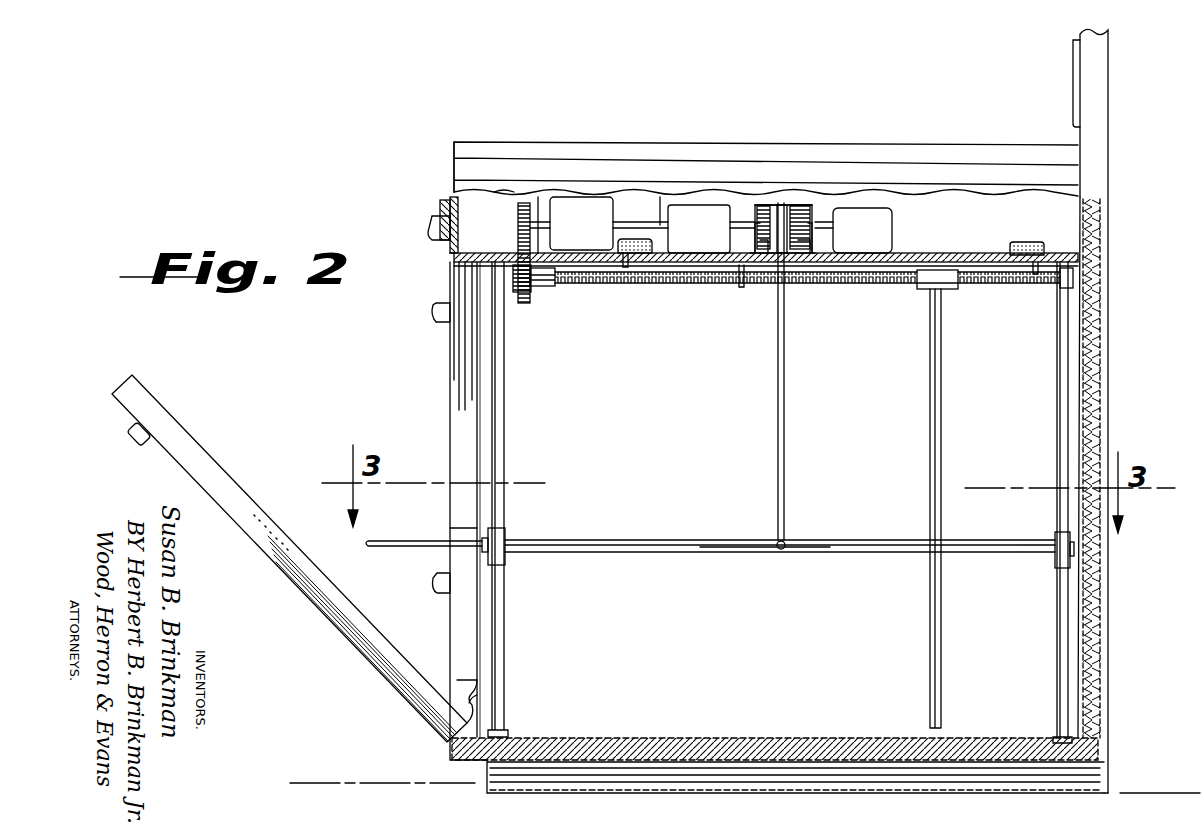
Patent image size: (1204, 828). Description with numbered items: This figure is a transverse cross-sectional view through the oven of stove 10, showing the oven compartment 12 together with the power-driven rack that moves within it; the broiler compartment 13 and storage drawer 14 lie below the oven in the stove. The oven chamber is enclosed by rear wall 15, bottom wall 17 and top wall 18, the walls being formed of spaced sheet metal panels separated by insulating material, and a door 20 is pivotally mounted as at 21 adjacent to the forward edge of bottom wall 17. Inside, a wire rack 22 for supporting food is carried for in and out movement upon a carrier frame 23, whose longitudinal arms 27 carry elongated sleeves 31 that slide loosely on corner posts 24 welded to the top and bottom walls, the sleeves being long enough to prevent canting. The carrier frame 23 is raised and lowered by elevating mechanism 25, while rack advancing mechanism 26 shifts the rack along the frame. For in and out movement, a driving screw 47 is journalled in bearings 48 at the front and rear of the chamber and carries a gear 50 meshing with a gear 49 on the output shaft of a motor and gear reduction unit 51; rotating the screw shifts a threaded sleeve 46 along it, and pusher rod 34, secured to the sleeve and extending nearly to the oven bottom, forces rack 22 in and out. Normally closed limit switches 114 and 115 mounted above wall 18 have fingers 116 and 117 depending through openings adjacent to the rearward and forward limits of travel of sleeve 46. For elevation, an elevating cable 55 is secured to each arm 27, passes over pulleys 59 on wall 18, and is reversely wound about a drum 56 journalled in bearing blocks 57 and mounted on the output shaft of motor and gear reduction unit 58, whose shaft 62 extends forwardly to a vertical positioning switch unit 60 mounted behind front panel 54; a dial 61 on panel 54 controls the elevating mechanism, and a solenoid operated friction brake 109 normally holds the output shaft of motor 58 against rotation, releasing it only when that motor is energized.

The stove 10 is at (1104, 162).
The oven compartment 12 is at (588, 404).
The broiler compartment 13 is at (452, 360).
The storage drawer 14 is at (452, 606).
The rear wall 15 is at (1105, 410).
The bottom wall 17 is at (805, 744).
The top wall 18 is at (930, 254).
The door 20 is at (343, 606).
The door pivot 21 is at (458, 690).
The rack 22 is at (388, 541).
The carrier frame 23 is at (636, 542).
The corner posts 24 is at (506, 452).
The elevating mechanism 25 is at (812, 191).
The rack advancing mechanism 26 is at (560, 186).
The longitudinal arms 27 is at (840, 542).
The sleeves 31 is at (505, 556).
The pusher rod 34 is at (942, 411).
The threaded sleeve 46 is at (930, 285).
The driving screw 47 is at (840, 284).
The bearings 48 is at (537, 282).
The gear 49 is at (516, 210).
The gear 50 is at (525, 300).
The motor and gear reduction unit 51 is at (587, 210).
The front panel 54 is at (452, 188).
The elevating cable 55 is at (784, 405).
The drum 56 is at (785, 204).
The bearing blocks 57 is at (757, 204).
The motor and gear reduction unit 58 is at (695, 214).
The pulleys 59 is at (742, 284).
The vertical positioning switch unit 60 is at (498, 190).
The dial 61 is at (434, 202).
The shaft 62 is at (660, 222).
The solenoid operated friction brake 109 is at (877, 238).
The limit switch 114 is at (632, 240).
The limit switch 115 is at (1027, 242).
The finger 116 is at (1033, 274).
The finger 117 is at (628, 268).